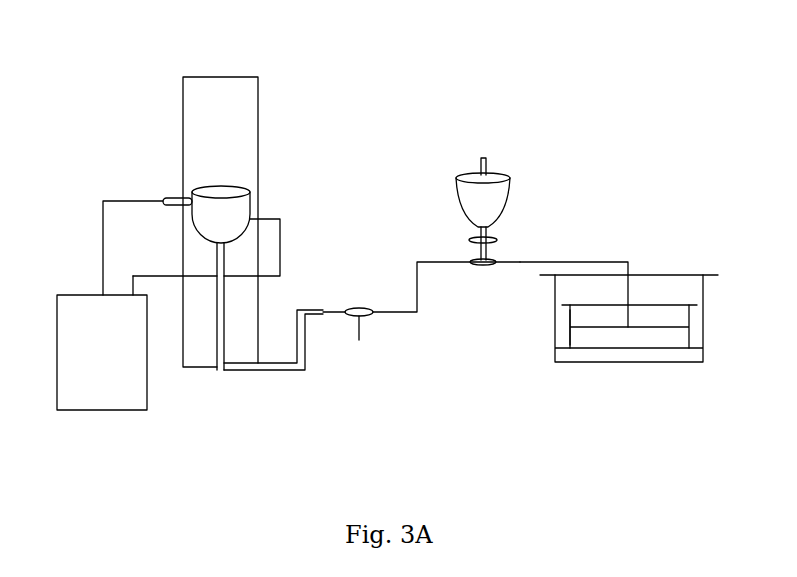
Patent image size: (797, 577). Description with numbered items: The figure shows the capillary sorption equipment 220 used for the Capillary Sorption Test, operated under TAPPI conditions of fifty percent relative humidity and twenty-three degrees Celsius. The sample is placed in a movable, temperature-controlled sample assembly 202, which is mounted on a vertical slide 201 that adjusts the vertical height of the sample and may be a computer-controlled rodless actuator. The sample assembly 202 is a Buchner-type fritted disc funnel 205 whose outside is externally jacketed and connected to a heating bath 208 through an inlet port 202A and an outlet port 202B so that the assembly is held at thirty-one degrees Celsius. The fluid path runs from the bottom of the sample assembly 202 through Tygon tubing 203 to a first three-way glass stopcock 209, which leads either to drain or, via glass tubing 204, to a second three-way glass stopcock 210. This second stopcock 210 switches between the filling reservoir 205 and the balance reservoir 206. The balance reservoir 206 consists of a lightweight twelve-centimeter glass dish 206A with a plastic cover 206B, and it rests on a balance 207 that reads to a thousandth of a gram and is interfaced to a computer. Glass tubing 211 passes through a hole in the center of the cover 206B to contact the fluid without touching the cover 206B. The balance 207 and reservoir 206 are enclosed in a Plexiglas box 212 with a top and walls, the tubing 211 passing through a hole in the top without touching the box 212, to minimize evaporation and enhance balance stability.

The vertical slide 201 is at (296, 117).
The sample assembly 202 is at (262, 197).
The inlet port 202A is at (281, 222).
The outlet port 202B is at (163, 200).
The Tygon tubing 203 is at (275, 372).
The glass tubing 204 is at (417, 293).
The filling reservoir 205 is at (545, 195).
The balance reservoir 206 is at (559, 317).
The glass dish 206A is at (570, 322).
The plastic cover 206B is at (652, 302).
The balance 207 is at (617, 355).
The heating bath 208 is at (90, 312).
The three-way glass stopcock 209 is at (341, 323).
The second three-way glass stopcock 210 is at (455, 278).
The glass tubing 211 is at (603, 260).
The Plexiglas box 212 is at (541, 288).
The capillary sorption equipment 220 is at (264, 462).